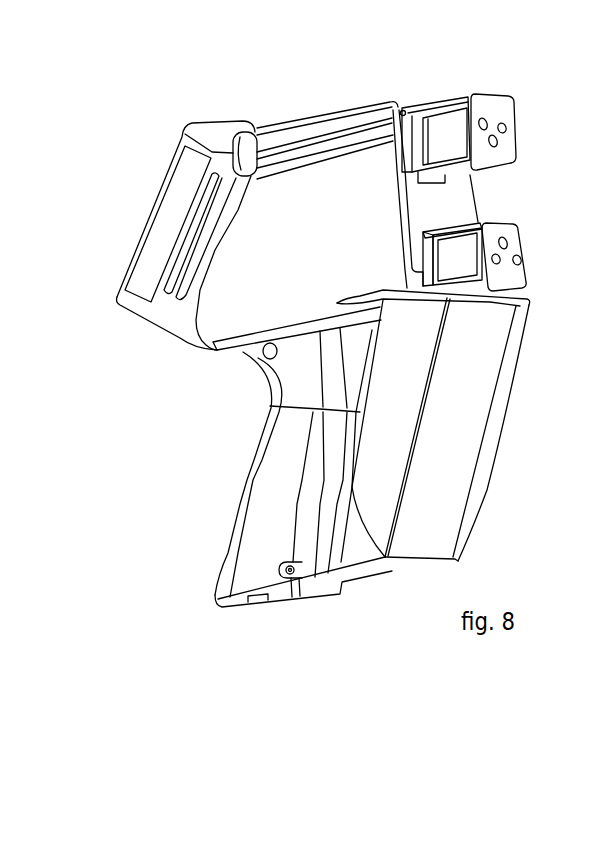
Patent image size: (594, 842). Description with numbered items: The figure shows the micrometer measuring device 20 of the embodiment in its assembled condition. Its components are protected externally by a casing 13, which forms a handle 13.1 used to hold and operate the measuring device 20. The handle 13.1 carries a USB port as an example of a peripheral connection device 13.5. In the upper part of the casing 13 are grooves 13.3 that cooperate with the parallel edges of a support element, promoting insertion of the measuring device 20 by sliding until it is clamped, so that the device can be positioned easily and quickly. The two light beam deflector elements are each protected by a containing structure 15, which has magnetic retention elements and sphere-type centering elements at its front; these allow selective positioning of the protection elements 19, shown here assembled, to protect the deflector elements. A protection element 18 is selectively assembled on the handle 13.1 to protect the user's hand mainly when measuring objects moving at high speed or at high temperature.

The measuring device 20 is at (141, 134).
The casing 13 is at (223, 128).
The handle 13.1 is at (255, 517).
The grooves 13.3 is at (313, 140).
The peripheral connection device 13.5 is at (245, 610).
The containing structure 15 is at (448, 129).
The protection element 18 is at (452, 469).
The protection elements 19 is at (488, 106).